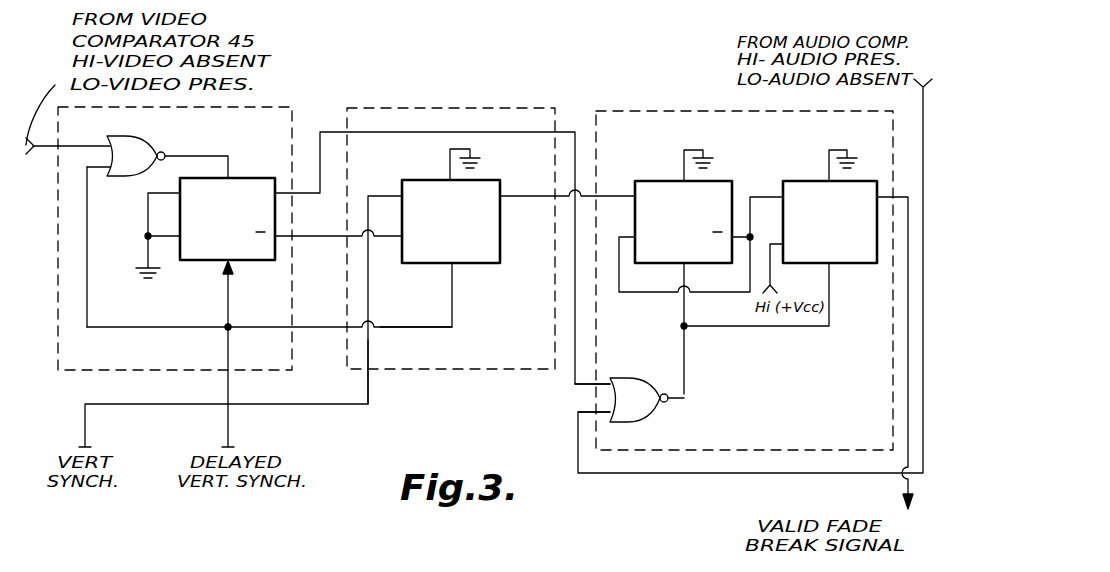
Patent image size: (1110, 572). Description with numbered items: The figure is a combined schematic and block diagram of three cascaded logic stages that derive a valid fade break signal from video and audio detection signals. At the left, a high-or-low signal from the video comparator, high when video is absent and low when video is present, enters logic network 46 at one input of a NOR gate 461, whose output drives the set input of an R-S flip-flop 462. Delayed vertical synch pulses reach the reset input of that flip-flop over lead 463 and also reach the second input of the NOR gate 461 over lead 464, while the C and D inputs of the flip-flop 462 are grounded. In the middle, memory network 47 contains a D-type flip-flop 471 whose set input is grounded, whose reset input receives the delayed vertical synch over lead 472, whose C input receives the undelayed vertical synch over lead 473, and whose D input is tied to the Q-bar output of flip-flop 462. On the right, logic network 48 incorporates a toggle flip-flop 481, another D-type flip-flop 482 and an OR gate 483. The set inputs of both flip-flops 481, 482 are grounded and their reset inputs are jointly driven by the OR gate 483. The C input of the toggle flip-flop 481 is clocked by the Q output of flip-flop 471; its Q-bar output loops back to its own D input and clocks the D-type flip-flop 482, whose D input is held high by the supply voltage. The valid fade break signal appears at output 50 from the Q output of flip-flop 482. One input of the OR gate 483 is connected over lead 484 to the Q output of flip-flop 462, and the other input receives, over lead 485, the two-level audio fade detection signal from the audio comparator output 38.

The output 38 is at (921, 95).
The logic network 46 is at (260, 107).
The memory network 47 is at (445, 108).
The logic network 48 is at (696, 108).
The output 50 is at (905, 491).
The NOR gate 461 is at (145, 139).
The R-S flip-flop 462 is at (245, 178).
The lead 463 is at (229, 310).
The lead 464 is at (88, 310).
The D-type flip-flop 471 is at (415, 178).
The lead 472 is at (418, 325).
The lead 473 is at (369, 358).
The toggle flip-flop 481 is at (658, 162).
The D-type flip-flop 482 is at (803, 162).
The OR gate 483 is at (664, 404).
The lead 484 is at (600, 380).
The lead 485 is at (603, 416).